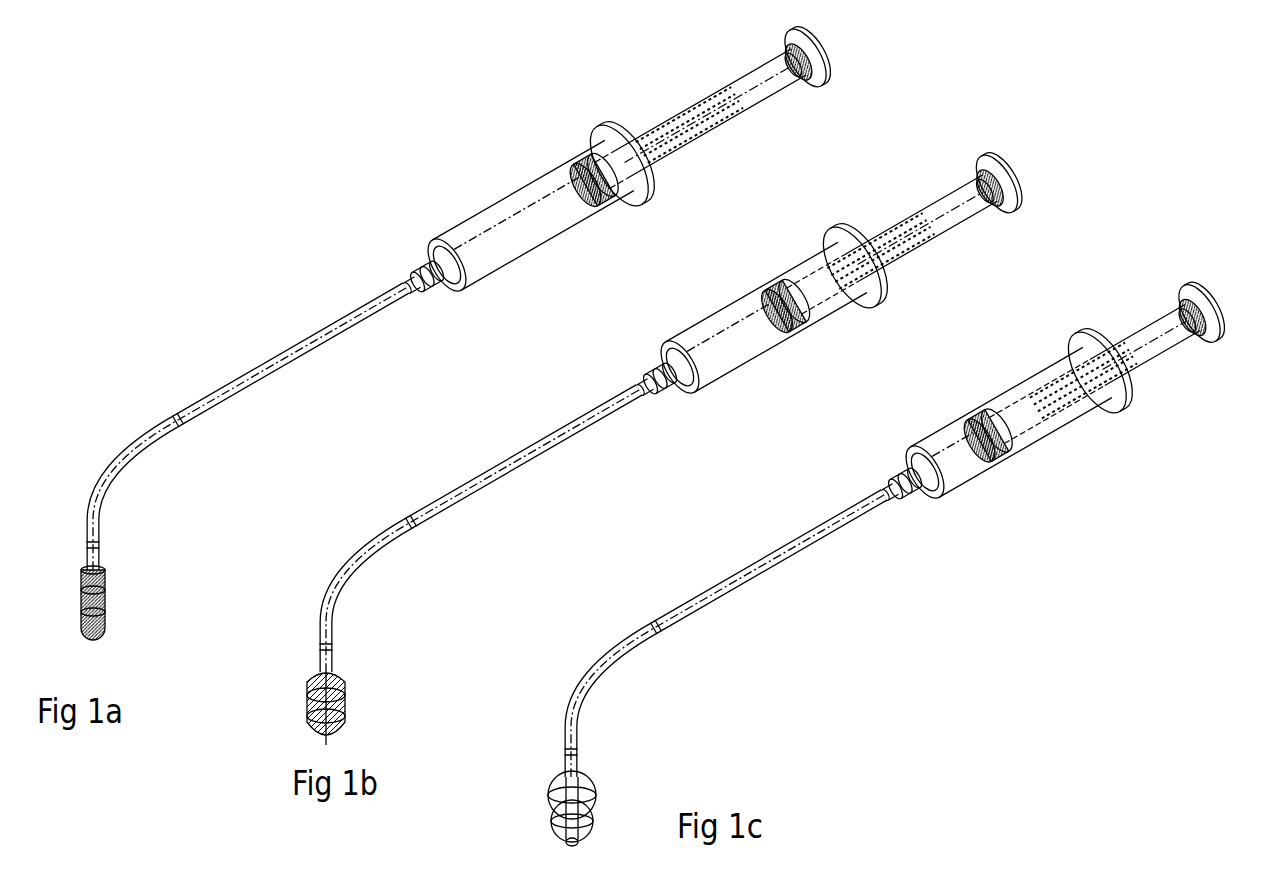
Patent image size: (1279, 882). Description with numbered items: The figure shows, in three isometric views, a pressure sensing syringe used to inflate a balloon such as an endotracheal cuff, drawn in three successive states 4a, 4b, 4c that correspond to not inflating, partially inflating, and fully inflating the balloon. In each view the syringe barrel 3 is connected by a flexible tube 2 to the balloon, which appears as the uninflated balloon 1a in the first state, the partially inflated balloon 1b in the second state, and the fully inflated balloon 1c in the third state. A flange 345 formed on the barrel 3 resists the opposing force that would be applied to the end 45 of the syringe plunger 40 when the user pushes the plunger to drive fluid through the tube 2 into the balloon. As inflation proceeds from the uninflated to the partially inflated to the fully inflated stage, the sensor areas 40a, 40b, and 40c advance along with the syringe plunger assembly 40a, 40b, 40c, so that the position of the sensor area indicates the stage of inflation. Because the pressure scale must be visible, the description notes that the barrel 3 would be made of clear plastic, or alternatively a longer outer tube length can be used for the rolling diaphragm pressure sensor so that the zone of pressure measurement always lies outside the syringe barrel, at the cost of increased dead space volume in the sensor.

In FIG. 1A, the balloon (uninflated) 1a is at (105, 588).
In FIG. 1B, the balloon (partially inflated) 1b is at (337, 672).
In FIG. 1C, the balloon (fully inflated) 1c is at (587, 772).
In FIG. 1A, the tube 2 is at (310, 341).
In FIG. 1B, the tube 2 is at (530, 449).
In FIG. 1C, the tube 2 is at (784, 548).
In FIG. 1A, the barrel 3 is at (507, 242).
In FIG. 1B, the barrel 3 is at (750, 333).
In FIG. 1C, the barrel 3 is at (967, 456).
In FIG. 1A, the syringe state (not inflating) 4a is at (582, 167).
In FIG. 1B, the syringe state (partially inflating) 4b is at (799, 281).
In FIG. 1C, the syringe state (fully inflating) 4c is at (1027, 396).
In FIG. 1A, the syringe plunger 40 is at (747, 90).
In FIG. 1B, the syringe plunger 40 is at (938, 217).
In FIG. 1C, the syringe plunger 40 is at (1143, 342).
In FIG. 1A, the sensor area / plunger assembly (uninflated stage) 40a is at (701, 125).
In FIG. 1B, the sensor area / plunger assembly (partially inflated stage) 40b is at (891, 252).
In FIG. 1C, the sensor area / plunger assembly (fully inflated stage) 40c is at (1104, 375).
In FIG. 1A, the plunger end 45 is at (812, 35).
In FIG. 1B, the plunger end 45 is at (1000, 160).
In FIG. 1C, the plunger end 45 is at (1191, 281).
In FIG. 1A, the flange 345 is at (614, 204).
In FIG. 1B, the flange 345 is at (862, 308).
In FIG. 1C, the flange 345 is at (1093, 418).